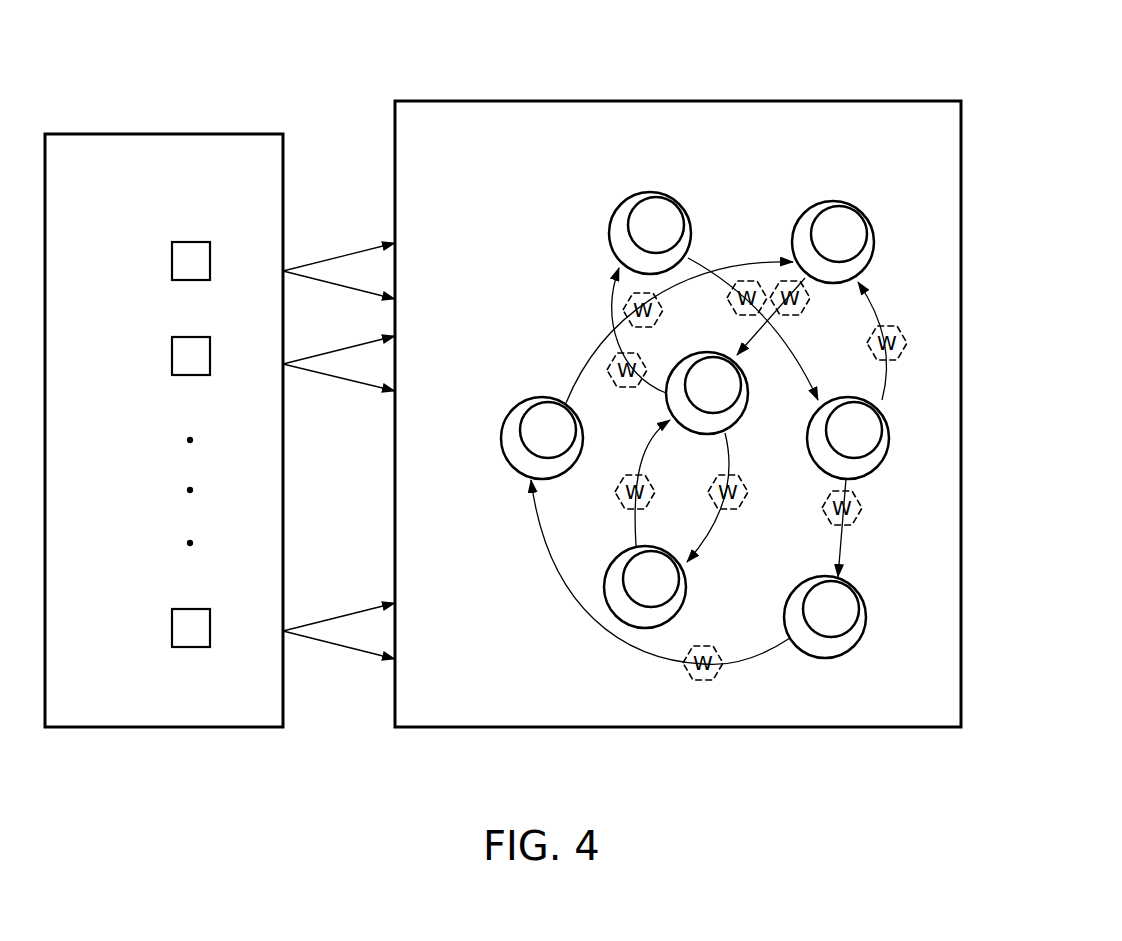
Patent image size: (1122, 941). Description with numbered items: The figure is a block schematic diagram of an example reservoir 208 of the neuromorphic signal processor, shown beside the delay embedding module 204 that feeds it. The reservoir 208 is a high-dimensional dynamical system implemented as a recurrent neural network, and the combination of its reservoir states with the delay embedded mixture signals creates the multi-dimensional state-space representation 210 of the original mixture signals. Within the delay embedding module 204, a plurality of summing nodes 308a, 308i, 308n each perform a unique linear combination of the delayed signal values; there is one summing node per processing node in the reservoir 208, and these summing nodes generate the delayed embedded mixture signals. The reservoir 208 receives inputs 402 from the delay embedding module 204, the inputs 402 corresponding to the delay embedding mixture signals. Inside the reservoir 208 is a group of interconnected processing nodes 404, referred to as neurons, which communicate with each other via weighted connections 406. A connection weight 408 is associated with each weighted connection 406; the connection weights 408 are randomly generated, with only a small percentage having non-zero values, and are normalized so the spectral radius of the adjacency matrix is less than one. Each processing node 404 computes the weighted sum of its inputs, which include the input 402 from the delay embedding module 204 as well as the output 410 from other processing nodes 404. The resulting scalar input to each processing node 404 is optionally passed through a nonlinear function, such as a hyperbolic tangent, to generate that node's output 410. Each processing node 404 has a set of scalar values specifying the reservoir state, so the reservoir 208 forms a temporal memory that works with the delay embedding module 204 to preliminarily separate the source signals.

The delay embedding module 204 is at (162, 133).
The reservoir 208 is at (642, 101).
The multi-dimensional state-space representation 210 is at (502, 158).
The summing node 308a is at (188, 242).
The summing node 308i is at (172, 358).
The summing node 308n is at (172, 628).
The inputs 402 is at (350, 252).
The processing node 404 is at (650, 193).
The weighted connection 406 is at (755, 260).
The connection weight 408 is at (683, 678).
The output 410 is at (605, 292).